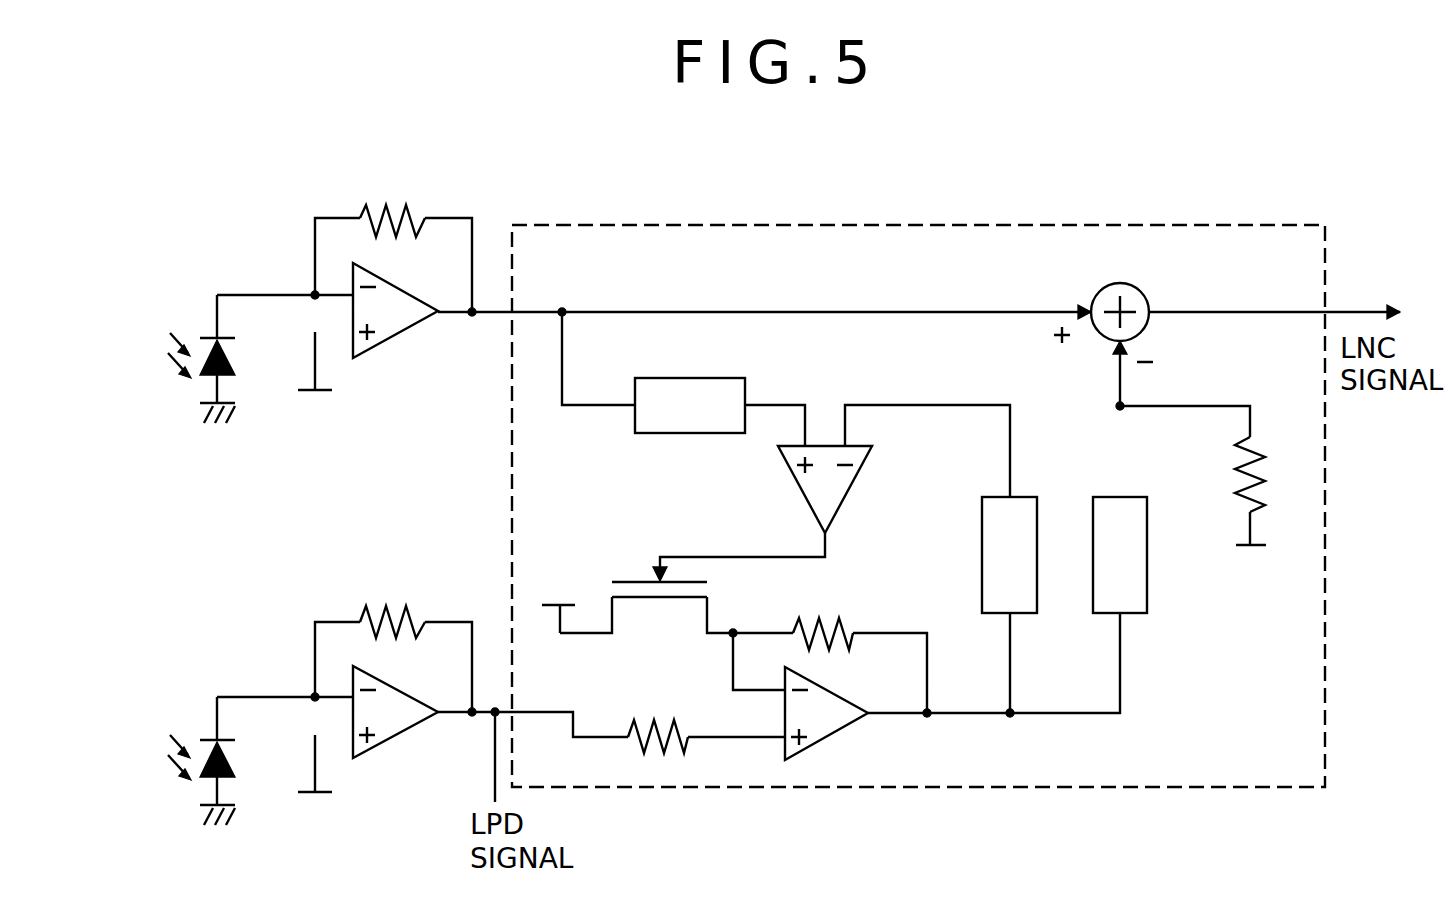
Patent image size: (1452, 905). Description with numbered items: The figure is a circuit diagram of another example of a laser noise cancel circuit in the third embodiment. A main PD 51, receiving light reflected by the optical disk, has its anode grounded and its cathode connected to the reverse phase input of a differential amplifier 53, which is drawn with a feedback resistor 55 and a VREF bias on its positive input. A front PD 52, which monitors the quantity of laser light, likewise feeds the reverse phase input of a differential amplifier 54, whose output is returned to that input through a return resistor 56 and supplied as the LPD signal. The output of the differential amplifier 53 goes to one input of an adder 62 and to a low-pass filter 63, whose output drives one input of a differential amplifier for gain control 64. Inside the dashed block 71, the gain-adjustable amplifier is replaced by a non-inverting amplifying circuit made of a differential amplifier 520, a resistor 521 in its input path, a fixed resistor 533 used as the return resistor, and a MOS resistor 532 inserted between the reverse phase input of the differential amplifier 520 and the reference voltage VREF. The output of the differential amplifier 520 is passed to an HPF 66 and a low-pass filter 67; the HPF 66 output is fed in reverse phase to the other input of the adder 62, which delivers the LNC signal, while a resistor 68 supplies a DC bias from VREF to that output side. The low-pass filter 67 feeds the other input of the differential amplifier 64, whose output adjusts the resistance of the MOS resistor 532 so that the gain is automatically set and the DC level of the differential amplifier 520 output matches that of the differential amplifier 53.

The main PD 51 is at (180, 383).
The front PD 52 is at (180, 786).
The differential amplifier 53 is at (403, 333).
The differential amplifier 54 is at (403, 735).
The feedback resistor 55 is at (398, 205).
The return resistor 56 is at (398, 606).
The adder 62 is at (1148, 288).
The low-pass filter 63 is at (688, 433).
The differential amplifier for gain control 64 is at (862, 473).
The HPF 66 is at (1150, 617).
The low-pass filter 67 is at (1025, 617).
The resistor 68 is at (1262, 447).
The gain control circuit 71 is at (1172, 225).
The differential amplifier 520 is at (842, 732).
The resistor 521 is at (663, 732).
The MOS resistor 532 is at (655, 613).
The fixed resistor 533 is at (828, 618).